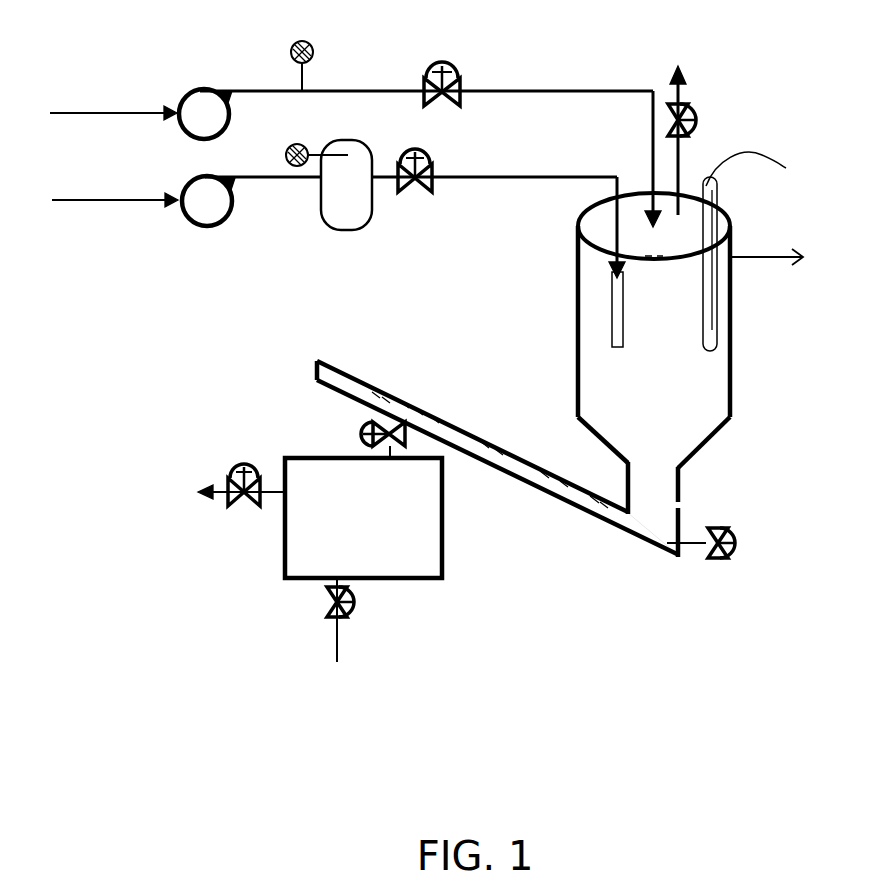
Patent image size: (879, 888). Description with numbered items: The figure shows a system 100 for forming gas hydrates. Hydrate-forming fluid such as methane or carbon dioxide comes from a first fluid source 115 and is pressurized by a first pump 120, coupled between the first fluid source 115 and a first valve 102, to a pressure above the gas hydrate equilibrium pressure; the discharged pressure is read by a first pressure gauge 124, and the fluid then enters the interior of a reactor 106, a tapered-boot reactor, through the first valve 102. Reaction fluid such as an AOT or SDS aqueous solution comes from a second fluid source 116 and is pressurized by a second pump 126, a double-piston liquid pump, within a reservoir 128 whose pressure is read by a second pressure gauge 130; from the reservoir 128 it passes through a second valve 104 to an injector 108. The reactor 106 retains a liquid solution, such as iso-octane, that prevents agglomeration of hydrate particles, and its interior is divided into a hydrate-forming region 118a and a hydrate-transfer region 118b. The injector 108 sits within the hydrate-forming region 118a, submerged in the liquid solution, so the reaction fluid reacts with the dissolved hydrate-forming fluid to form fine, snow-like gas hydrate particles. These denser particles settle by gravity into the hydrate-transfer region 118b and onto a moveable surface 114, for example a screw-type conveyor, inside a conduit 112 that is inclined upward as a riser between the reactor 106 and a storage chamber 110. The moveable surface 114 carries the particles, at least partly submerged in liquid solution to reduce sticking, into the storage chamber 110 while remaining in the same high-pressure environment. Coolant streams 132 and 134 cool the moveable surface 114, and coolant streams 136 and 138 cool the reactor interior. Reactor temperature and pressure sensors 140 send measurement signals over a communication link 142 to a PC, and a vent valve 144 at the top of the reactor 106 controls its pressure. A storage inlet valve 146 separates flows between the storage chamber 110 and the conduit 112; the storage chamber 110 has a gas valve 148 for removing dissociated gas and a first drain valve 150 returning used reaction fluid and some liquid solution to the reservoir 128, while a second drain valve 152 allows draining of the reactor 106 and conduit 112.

The system 100 is at (780, 38).
The first valve 102 is at (440, 46).
The second valve 104 is at (445, 137).
The reactor 106 is at (743, 298).
The injector 108 is at (598, 313).
The storage chamber 110 is at (309, 446).
The conduit 112 is at (520, 501).
The moveable surface 114 is at (475, 436).
The first fluid source 115 is at (335, 159).
The second fluid source 116 is at (317, 227).
The hydrate-forming region 118a is at (626, 289).
The hydrate-transfer region 118b is at (630, 384).
The first pump 120 is at (205, 82).
The first pressure gauge 124 is at (297, 32).
The second pump 126 is at (232, 240).
The reservoir 128 is at (378, 245).
The second pressure gauge 130 is at (309, 135).
The coolant stream 132 is at (625, 541).
The coolant stream 134 is at (372, 383).
The coolant stream 136 is at (711, 461).
The coolant stream 138 is at (784, 257).
The reactor temperature and pressure sensors 140 is at (731, 191).
The communication link 142 is at (775, 148).
The vent valve 144 is at (707, 95).
The storage inlet valve 146 is at (365, 416).
The gas valve 148 is at (239, 456).
The first drain valve 150 is at (366, 633).
The second drain valve 152 is at (747, 520).